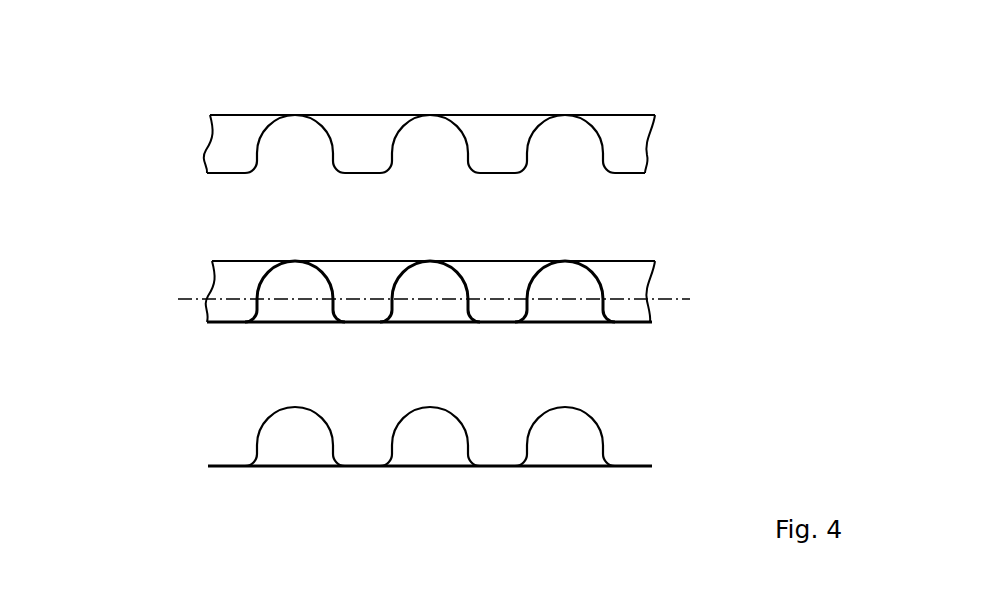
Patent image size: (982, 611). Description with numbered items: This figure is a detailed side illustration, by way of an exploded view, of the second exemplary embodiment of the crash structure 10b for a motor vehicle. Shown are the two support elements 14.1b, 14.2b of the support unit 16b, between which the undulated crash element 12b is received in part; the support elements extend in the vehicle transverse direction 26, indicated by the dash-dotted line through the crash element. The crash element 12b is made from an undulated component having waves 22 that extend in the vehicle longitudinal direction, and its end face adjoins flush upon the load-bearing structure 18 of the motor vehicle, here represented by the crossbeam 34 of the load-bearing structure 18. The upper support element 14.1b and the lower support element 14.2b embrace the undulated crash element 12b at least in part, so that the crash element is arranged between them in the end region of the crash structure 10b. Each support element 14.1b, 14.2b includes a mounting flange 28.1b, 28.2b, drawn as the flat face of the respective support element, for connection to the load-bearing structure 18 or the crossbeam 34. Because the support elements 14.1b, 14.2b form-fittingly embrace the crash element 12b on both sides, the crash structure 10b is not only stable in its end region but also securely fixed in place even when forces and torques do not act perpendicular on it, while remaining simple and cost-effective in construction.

The crash structure 10b is at (762, 189).
The support unit 16b is at (186, 128).
The support element 14.1b is at (372, 127).
The mounting flange 28.1b is at (492, 114).
The support element 14.2b is at (288, 422).
The mounting flange 28.2b is at (562, 468).
The load-bearing structure 18 is at (355, 275).
The crossbeam 34 is at (430, 254).
The crash element 12b is at (265, 270).
The waves 22 is at (563, 260).
The vehicle transverse direction 26 is at (683, 298).